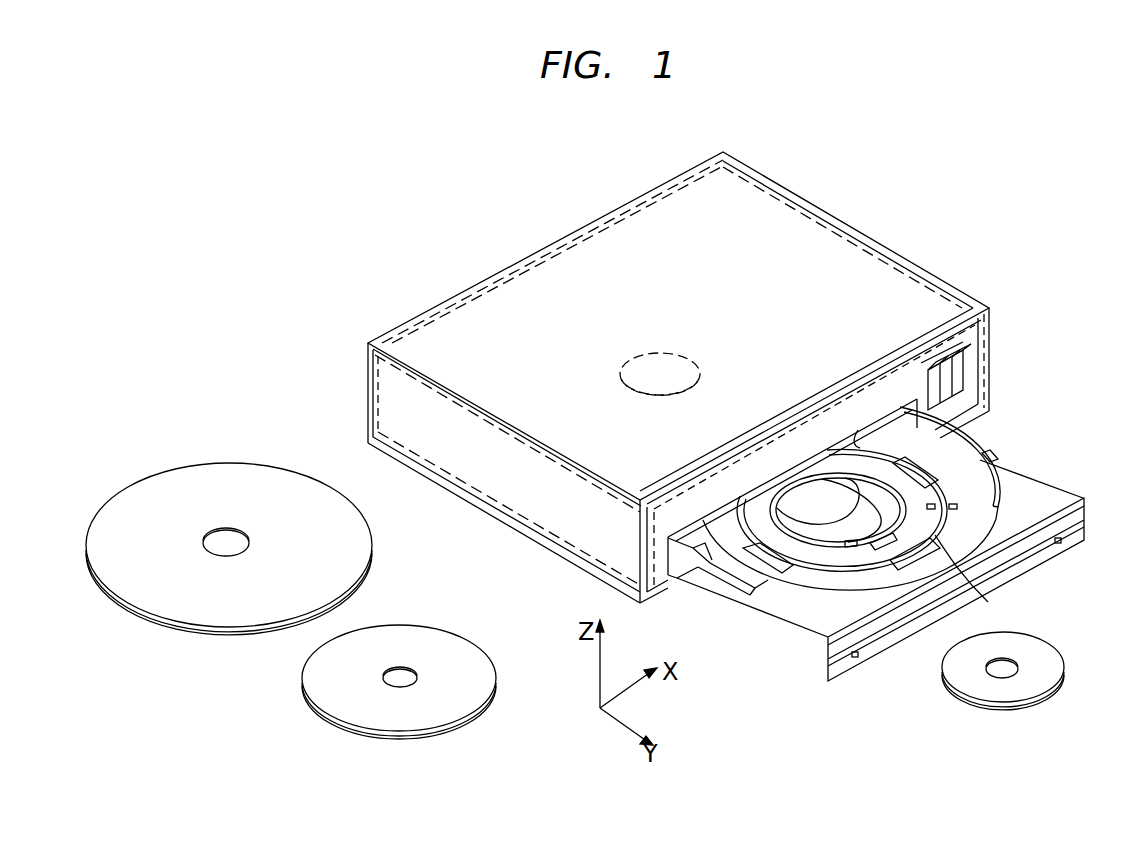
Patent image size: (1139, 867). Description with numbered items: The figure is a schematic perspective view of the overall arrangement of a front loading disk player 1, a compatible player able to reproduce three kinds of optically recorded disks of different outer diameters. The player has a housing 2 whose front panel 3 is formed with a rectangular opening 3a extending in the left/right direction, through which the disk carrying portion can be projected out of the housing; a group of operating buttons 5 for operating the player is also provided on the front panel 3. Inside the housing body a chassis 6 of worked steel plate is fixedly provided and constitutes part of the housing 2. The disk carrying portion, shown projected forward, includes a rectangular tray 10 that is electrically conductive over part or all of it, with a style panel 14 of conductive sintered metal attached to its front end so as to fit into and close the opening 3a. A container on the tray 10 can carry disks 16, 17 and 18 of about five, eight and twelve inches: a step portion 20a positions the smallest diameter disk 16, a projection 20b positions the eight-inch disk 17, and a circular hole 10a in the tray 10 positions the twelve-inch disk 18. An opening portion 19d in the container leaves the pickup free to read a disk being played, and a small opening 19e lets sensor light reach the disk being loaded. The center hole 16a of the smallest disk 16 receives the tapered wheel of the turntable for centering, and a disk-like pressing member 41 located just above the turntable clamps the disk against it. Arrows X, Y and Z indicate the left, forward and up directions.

The front loading disk player 1 is at (903, 240).
The housing 2 is at (528, 250).
The front panel 3 is at (800, 432).
The rectangular opening 3a is at (858, 430).
The group of operating buttons 5 is at (937, 357).
The chassis 6 is at (566, 542).
The tray 10 is at (1045, 492).
The circular hole 10a is at (990, 470).
The style panel 14 is at (1028, 543).
The smallest diameter disk 16 is at (1050, 682).
The center hole 16a is at (1006, 663).
The 8-inch disk 17 is at (400, 632).
The 12-inch disk 18 is at (225, 468).
The opening portion 19d is at (792, 484).
The small opening 19e is at (852, 541).
The step portion 20a is at (846, 476).
The projection 20b is at (986, 578).
The pressing member 41 is at (680, 358).